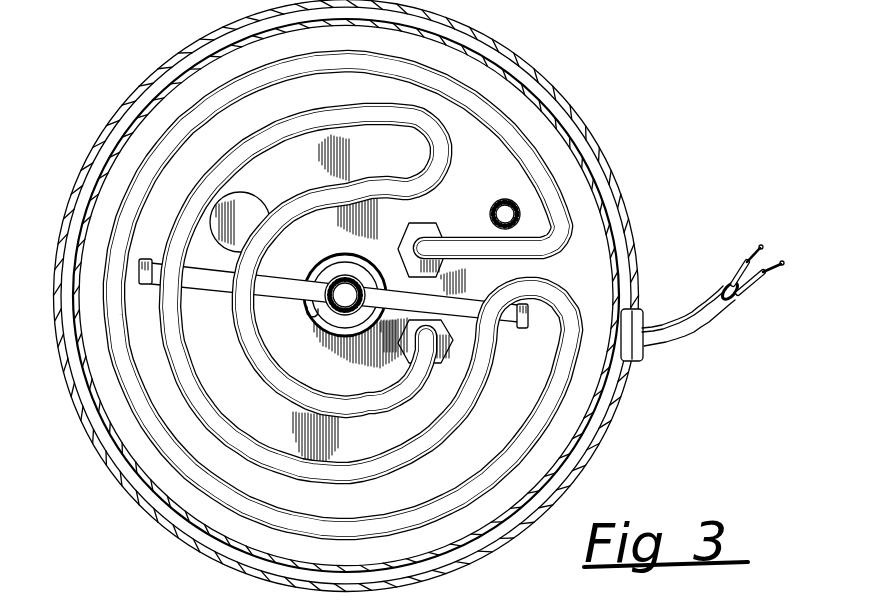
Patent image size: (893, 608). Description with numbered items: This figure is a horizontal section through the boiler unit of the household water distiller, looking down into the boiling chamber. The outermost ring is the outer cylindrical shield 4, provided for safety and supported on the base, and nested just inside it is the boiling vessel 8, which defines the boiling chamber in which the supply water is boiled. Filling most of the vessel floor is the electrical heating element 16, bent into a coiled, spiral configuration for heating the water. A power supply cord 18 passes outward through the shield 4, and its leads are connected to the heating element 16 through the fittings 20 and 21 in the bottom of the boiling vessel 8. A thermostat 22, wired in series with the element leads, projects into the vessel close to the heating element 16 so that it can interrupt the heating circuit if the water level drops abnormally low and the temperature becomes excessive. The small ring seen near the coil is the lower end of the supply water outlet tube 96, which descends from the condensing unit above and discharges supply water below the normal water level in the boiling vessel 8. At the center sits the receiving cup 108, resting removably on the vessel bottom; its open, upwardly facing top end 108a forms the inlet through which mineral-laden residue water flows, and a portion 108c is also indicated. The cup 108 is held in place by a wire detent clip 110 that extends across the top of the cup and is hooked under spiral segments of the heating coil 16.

The outer cylindrical shield 4 is at (551, 89).
The boiling vessel 8 is at (76, 229).
The electrical heating element 16 is at (438, 162).
The power supply cord 18 is at (719, 315).
The fitting 20 is at (440, 363).
The fitting 21 is at (424, 232).
The thermostat 22 is at (247, 198).
The supply water outlet tube 96 is at (494, 206).
The receiving cup 108 is at (336, 251).
The top end of cup 108a is at (316, 300).
The spider tab 108c is at (333, 317).
The wire detent clip 110 is at (525, 330).